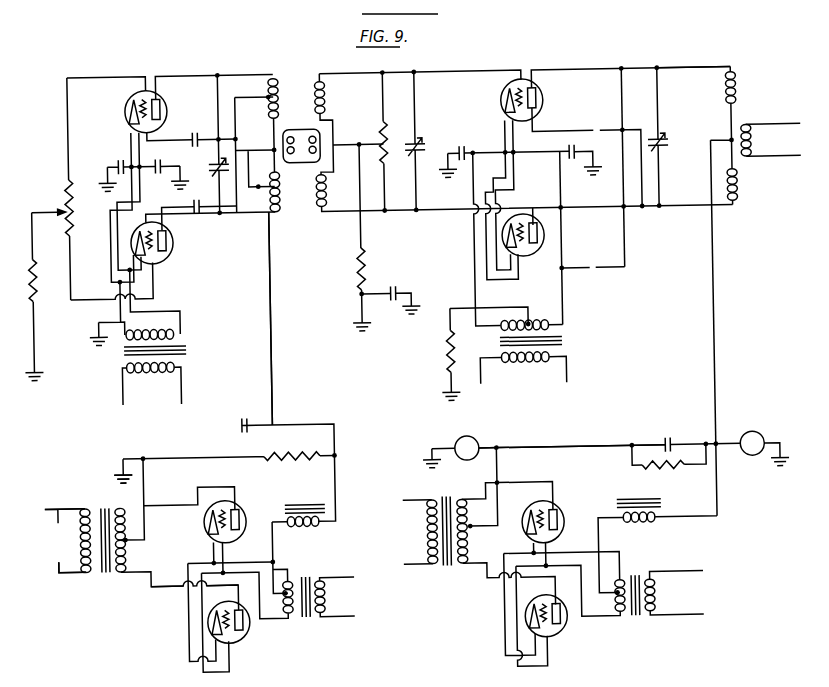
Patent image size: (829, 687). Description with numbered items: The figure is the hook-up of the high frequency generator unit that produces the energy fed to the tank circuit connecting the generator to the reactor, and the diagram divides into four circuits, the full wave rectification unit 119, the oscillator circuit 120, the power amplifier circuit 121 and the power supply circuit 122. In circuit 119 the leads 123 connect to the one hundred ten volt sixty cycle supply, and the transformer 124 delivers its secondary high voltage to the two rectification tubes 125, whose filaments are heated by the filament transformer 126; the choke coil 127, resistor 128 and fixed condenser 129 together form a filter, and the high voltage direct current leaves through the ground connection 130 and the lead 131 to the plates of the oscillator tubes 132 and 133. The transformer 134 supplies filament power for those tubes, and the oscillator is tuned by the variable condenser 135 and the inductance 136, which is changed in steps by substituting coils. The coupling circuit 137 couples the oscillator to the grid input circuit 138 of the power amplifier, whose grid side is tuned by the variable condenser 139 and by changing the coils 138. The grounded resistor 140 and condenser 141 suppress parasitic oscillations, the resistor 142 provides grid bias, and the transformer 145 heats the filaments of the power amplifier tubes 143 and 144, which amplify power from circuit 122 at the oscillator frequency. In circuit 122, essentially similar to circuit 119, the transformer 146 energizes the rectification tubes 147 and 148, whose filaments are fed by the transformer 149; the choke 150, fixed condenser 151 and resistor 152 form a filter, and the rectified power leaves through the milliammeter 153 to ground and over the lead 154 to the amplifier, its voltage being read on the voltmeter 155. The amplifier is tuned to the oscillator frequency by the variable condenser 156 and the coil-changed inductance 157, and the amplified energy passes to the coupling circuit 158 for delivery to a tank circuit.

The full wave rectification unit 119 is at (159, 578).
The oscillator circuit 120 is at (66, 118).
The power amplifier circuit 121 is at (712, 66).
The power supply circuit 122 is at (614, 442).
The leads 123 is at (68, 541).
The transformer 124 is at (102, 574).
The rectification tubes 125 is at (243, 508).
The filament transformer 126 is at (304, 618).
The choke coil 127 is at (308, 525).
The resistor 128 is at (290, 458).
The fixed condenser 129 is at (241, 418).
The ground connection 130 is at (112, 470).
The lead 131 is at (272, 300).
The oscillator tube 132 is at (128, 100).
The oscillator tube 133 is at (172, 252).
The transformer 134 is at (181, 347).
The variable condenser 135 is at (228, 190).
The inductance 136 is at (292, 62).
The coupling circuit 137 is at (297, 168).
The grid input circuit 138 is at (327, 98).
The variable condenser 139 is at (438, 134).
The resistor 140 is at (356, 260).
The condenser 141 is at (396, 288).
The resistor 142 is at (382, 130).
The power amplifier tube 143 is at (553, 84).
The power amplifier tube 144 is at (504, 228).
The transformer 145 is at (565, 330).
The transformer 146 is at (476, 572).
The rectification tube 147 is at (558, 512).
The rectification tube 148 is at (562, 632).
The transformer 149 is at (651, 598).
The choke 150 is at (652, 526).
The fixed condenser 151 is at (678, 432).
The resistor 152 is at (676, 474).
The milliammeter 153 is at (476, 443).
The lead 154 is at (715, 294).
The voltmeter 155 is at (752, 438).
The variable condenser 156 is at (670, 136).
The inductance 157 is at (745, 90).
The coupling circuit 158 is at (756, 146).